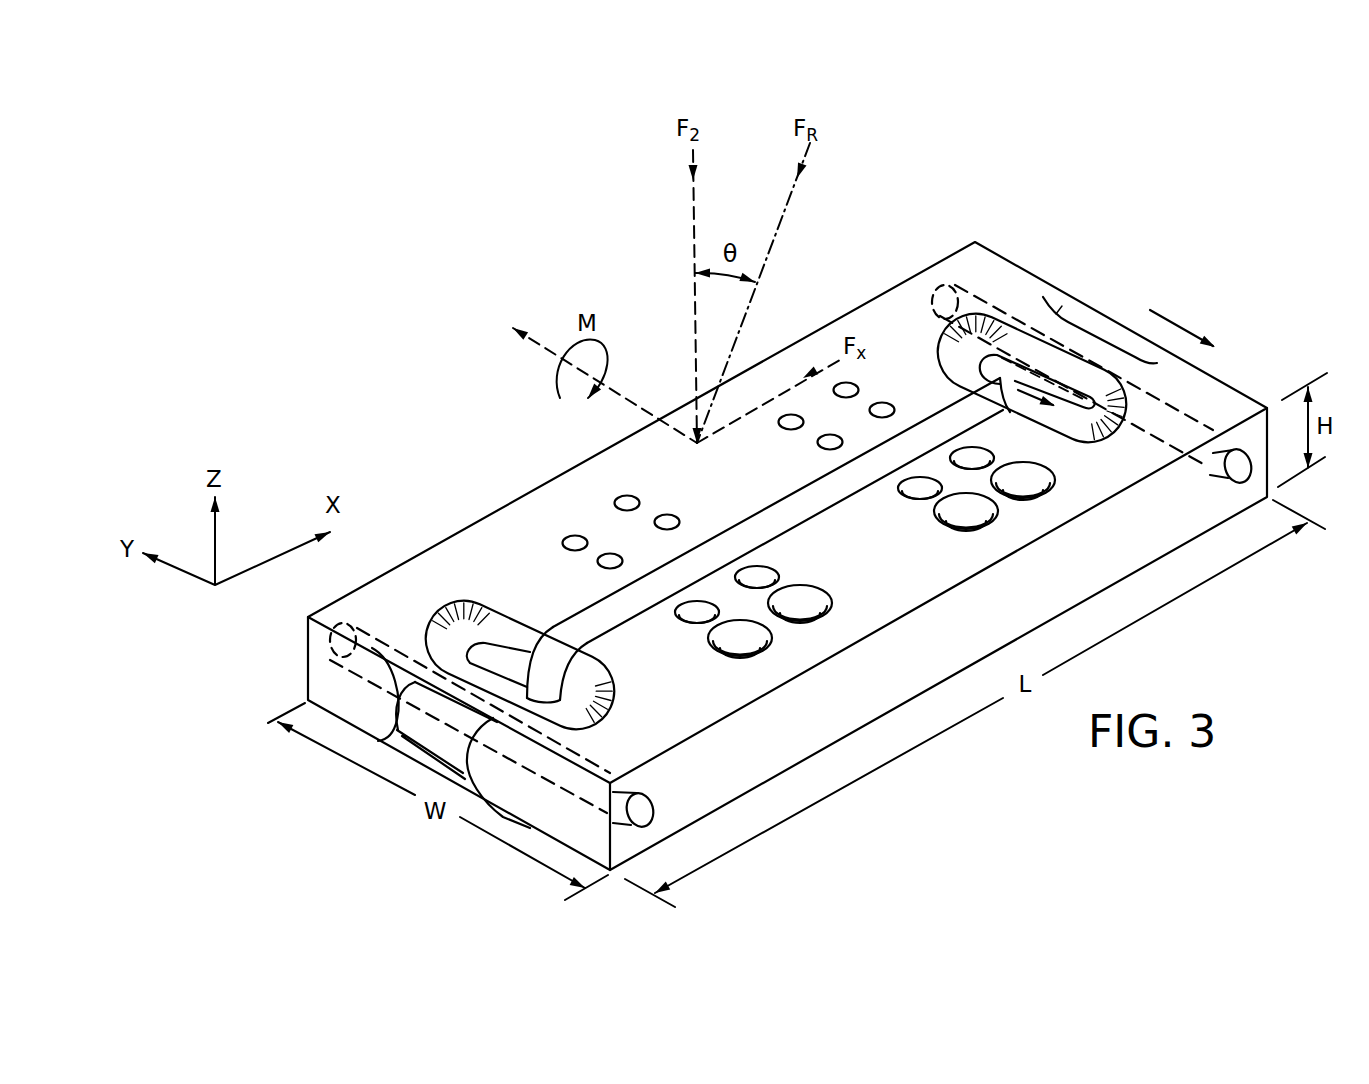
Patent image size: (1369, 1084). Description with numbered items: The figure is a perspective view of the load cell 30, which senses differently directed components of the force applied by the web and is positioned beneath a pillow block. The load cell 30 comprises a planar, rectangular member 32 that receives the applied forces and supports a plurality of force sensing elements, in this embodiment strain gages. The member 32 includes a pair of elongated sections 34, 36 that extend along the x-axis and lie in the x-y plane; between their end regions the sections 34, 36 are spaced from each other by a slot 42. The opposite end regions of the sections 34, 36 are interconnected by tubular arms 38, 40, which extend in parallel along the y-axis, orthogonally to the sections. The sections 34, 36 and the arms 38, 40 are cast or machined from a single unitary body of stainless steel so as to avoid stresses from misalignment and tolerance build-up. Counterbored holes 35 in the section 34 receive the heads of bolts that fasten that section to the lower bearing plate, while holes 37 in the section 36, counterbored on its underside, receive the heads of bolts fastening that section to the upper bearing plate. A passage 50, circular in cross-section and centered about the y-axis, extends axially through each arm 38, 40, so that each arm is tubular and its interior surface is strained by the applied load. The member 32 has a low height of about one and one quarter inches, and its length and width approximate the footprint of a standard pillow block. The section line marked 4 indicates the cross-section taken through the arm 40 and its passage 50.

The load cell 30 is at (864, 268).
The planar, rectangular member 32 is at (518, 482).
The elongated section 34 is at (815, 669).
The elongated section 36 is at (447, 537).
The counterbored holes 35 is at (810, 582).
The holes 37 is at (537, 556).
The tubular arm 38 is at (427, 757).
The tubular arm 40 is at (1082, 318).
The slot 42 is at (763, 521).
The passage 50 is at (1230, 470).
The section line 4- 4 is at (1120, 369).